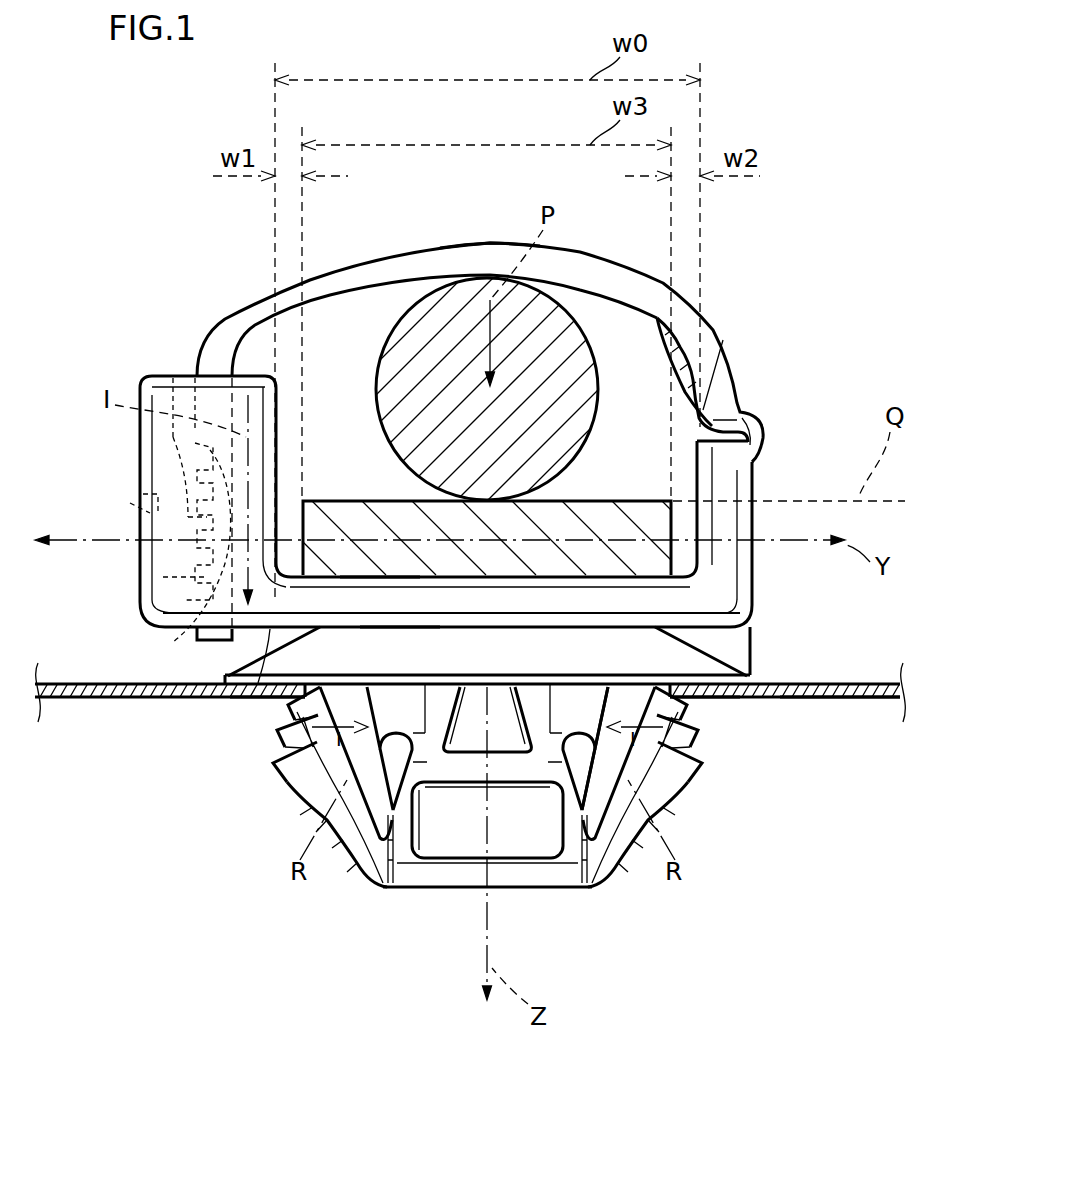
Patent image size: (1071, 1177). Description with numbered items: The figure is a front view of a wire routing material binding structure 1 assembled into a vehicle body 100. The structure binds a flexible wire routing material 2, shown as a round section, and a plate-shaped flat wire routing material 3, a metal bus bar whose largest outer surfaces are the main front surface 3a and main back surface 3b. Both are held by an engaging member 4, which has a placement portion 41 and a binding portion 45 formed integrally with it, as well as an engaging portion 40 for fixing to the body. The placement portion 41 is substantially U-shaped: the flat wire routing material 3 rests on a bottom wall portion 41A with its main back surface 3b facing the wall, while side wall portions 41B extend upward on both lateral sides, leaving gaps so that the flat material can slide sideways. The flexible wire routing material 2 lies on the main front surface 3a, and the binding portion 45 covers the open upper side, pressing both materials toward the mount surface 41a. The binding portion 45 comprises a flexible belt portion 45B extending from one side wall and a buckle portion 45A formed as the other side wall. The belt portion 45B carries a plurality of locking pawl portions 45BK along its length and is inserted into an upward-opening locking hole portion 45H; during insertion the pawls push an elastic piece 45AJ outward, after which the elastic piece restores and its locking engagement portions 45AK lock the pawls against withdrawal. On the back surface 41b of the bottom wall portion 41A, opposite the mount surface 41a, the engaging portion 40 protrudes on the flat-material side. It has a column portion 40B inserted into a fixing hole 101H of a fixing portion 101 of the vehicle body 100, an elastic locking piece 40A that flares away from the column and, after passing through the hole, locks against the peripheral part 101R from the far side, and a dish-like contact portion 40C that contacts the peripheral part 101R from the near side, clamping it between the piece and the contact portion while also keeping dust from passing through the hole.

The wire routing material binding structure 1 is at (772, 132).
The flexible wire routing material 2 is at (557, 302).
The flat wire routing material 3 is at (680, 375).
The main front surface 3a is at (633, 488).
The main back surface 3b is at (612, 752).
The engaging member 4 is at (134, 374).
The engaging portion 40 is at (378, 900).
The elastic locking piece 40A is at (287, 780).
The column portion 40B is at (498, 770).
The contact portion 40C is at (707, 665).
The placement portion 41 is at (768, 560).
The bottom wall portion 41A is at (752, 632).
The side wall portions 41B is at (723, 487).
The mount surface 41a is at (380, 575).
The back surface 41b is at (393, 640).
The binding portion 45 is at (733, 333).
The buckle portion 45A is at (126, 534).
The elastic piece 45AJ is at (143, 494).
The locking engagement portions 45AK is at (163, 577).
The belt portion 45B is at (487, 250).
The locking pawl portions 45BK is at (207, 607).
The locking hole portion 45H is at (185, 392).
The vehicle body 100 is at (853, 743).
The fixing portion 101 is at (831, 705).
The fixing hole 101H is at (288, 716).
The peripheral part 101R is at (232, 697).